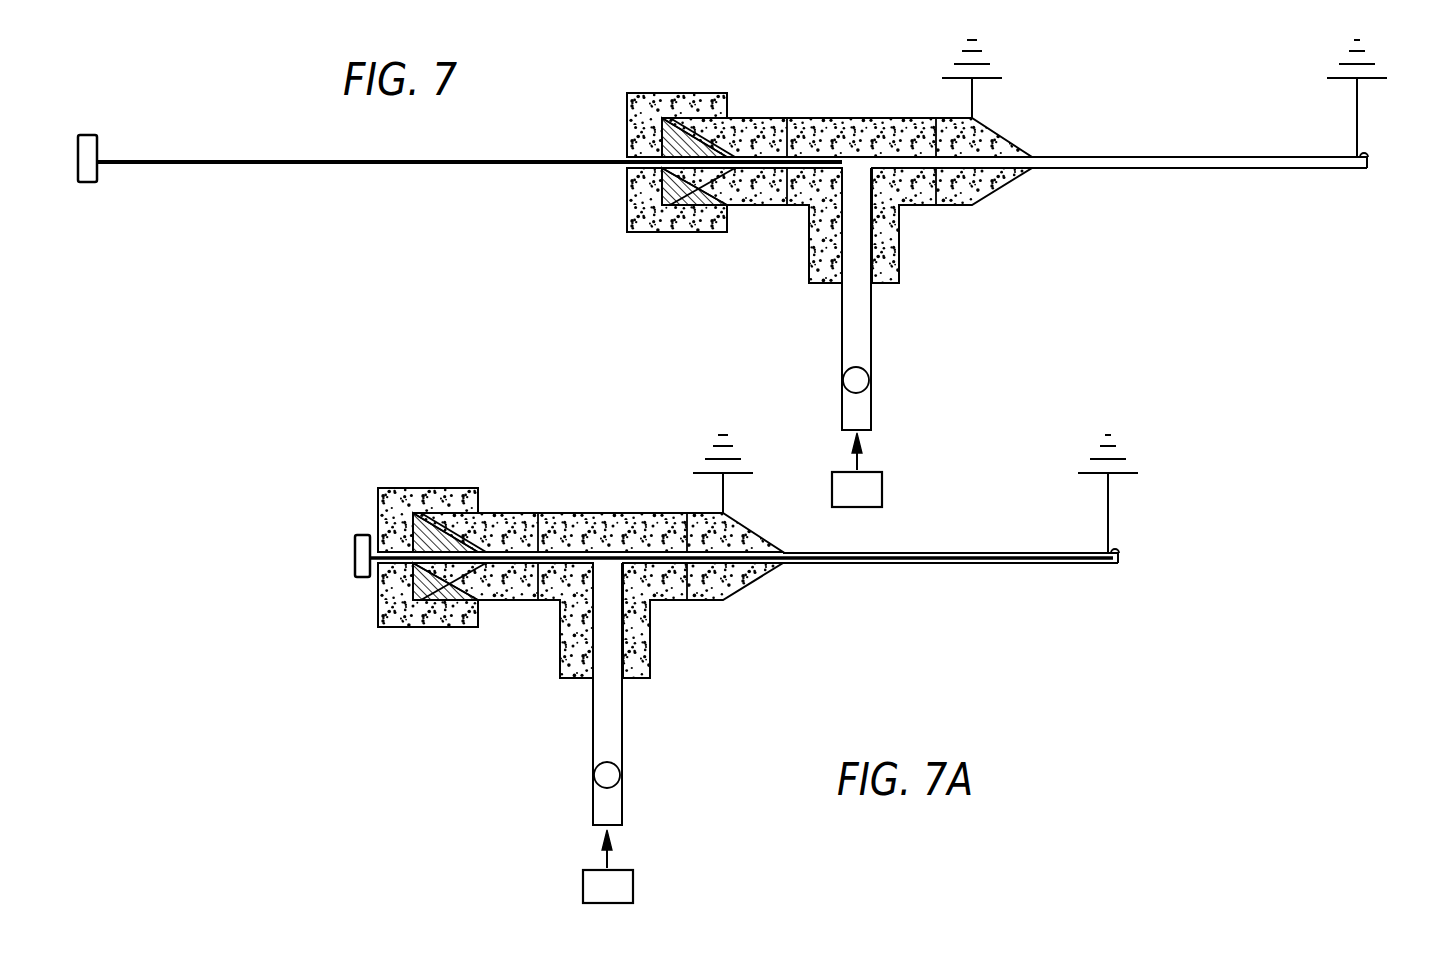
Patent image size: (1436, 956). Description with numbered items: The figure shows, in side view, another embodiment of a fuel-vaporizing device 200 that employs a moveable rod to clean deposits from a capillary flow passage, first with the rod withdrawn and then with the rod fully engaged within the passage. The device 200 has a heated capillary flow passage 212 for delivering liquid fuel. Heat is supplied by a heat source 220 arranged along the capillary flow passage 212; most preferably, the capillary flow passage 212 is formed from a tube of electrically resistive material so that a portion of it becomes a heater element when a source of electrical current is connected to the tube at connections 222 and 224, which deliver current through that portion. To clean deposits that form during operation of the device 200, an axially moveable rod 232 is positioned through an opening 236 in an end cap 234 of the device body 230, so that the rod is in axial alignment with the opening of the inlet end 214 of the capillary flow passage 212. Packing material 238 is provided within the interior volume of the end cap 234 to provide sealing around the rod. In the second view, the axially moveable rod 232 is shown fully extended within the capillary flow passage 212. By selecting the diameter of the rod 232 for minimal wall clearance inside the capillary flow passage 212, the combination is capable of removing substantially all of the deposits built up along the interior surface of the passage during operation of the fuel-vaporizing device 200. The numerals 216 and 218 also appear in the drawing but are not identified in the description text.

In FIG. 7, the fuel-vaporizing device 200 is at (751, 270).
In FIG. 7A, the fuel-vaporizing device 200 is at (748, 669).
In FIG. 7, the capillary flow passage 212 is at (1228, 124).
In FIG. 7A, the capillary flow passage 212 is at (979, 520).
In FIG. 7, the inlet end 214 is at (807, 159).
In FIG. 7A, the inlet end 214 is at (556, 556).
In FIG. 7, the distal end of tube 216 is at (1369, 183).
In FIG. 7A, the distal end of tube 216 is at (1092, 563).
In FIG. 7, the actuator stem 218 is at (882, 337).
In FIG. 7A, the actuator stem 218 is at (622, 775).
In FIG. 7, the heat source 220 is at (1334, 98).
In FIG. 7A, the heat source 220 is at (1032, 553).
In FIG. 7, the connection 222 is at (993, 82).
In FIG. 7A, the connection 222 is at (725, 513).
In FIG. 7, the connection 224 is at (1392, 131).
In FIG. 7A, the connection 224 is at (1118, 553).
In FIG. 7, the device body 230 is at (829, 170).
In FIG. 7A, the device body 230 is at (570, 513).
In FIG. 7, the axially moveable rod 232 is at (460, 149).
In FIG. 7A, the axially moveable rod 232 is at (993, 561).
In FIG. 7, the end cap 234 is at (698, 221).
In FIG. 7A, the end cap 234 is at (417, 603).
In FIG. 7, the opening 236 is at (648, 169).
In FIG. 7A, the opening 236 is at (378, 593).
In FIG. 7, the packing material 238 is at (693, 96).
In FIG. 7A, the packing material 238 is at (412, 523).